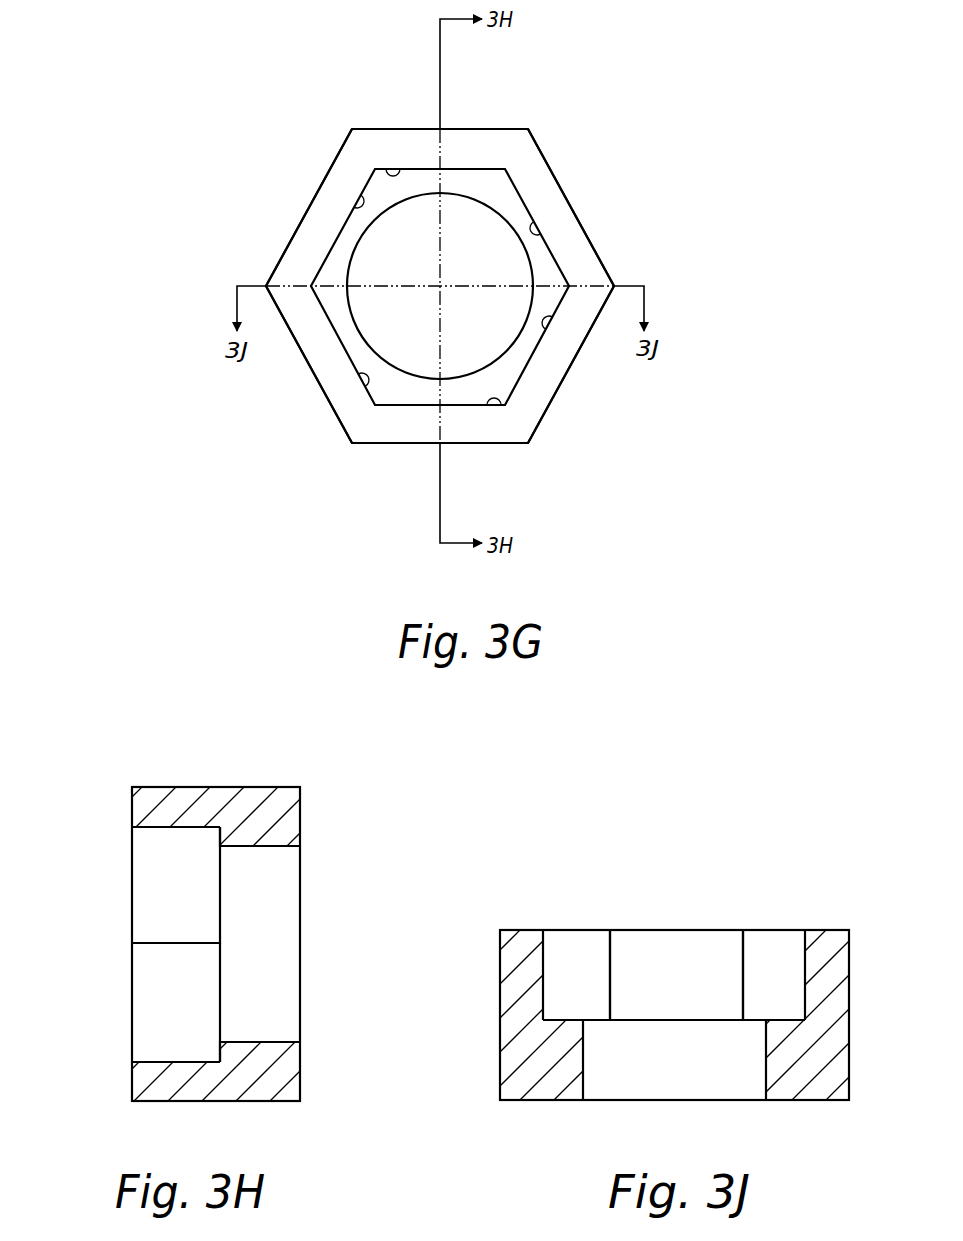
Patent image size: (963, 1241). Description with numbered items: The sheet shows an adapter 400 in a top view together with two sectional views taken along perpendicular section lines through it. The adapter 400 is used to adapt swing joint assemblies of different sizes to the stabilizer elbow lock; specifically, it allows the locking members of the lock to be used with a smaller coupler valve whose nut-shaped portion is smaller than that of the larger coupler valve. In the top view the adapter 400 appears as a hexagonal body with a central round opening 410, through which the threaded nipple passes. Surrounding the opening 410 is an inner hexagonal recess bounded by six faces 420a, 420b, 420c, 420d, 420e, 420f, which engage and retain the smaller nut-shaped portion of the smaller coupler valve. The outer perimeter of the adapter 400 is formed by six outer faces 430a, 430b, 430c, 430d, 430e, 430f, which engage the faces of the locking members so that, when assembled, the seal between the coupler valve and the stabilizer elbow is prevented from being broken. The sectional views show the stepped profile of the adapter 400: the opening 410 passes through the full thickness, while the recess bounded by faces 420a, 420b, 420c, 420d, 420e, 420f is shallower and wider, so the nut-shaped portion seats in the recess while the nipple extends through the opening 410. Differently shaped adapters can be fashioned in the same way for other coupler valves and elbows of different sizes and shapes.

In FIG. 3G, the adapter 400 is at (527, 153).
In FIG. 3H, the adapter 400 is at (175, 797).
In FIG. 3J, the adapter 400 is at (505, 1015).
In FIG. 3G, the opening 410 is at (373, 327).
In FIG. 3H, the opening 410 is at (282, 942).
In FIG. 3J, the opening 410 is at (612, 1080).
In FIG. 3G, the face 420a is at (535, 231).
In FIG. 3H, the face 420a is at (160, 905).
In FIG. 3G, the face 420b is at (550, 323).
In FIG. 3H, the face 420b is at (162, 996).
In FIG. 3J, the face 420b is at (769, 988).
In FIG. 3G, the face 420c is at (496, 404).
In FIG. 3H, the face 420c is at (150, 1043).
In FIG. 3J, the face 420c is at (668, 986).
In FIG. 3G, the face 420d is at (363, 382).
In FIG. 3J, the face 420d is at (565, 985).
In FIG. 3G, the face 420e is at (358, 200).
In FIG. 3G, the face 420f is at (393, 170).
In FIG. 3H, the face 420f is at (148, 829).
In FIG. 3G, the face 430a is at (560, 187).
In FIG. 3G, the face 430b is at (555, 396).
In FIG. 3G, the face 430c is at (398, 444).
In FIG. 3G, the face 430d is at (299, 348).
In FIG. 3G, the face 430e is at (291, 240).
In FIG. 3G, the face 430f is at (415, 128).